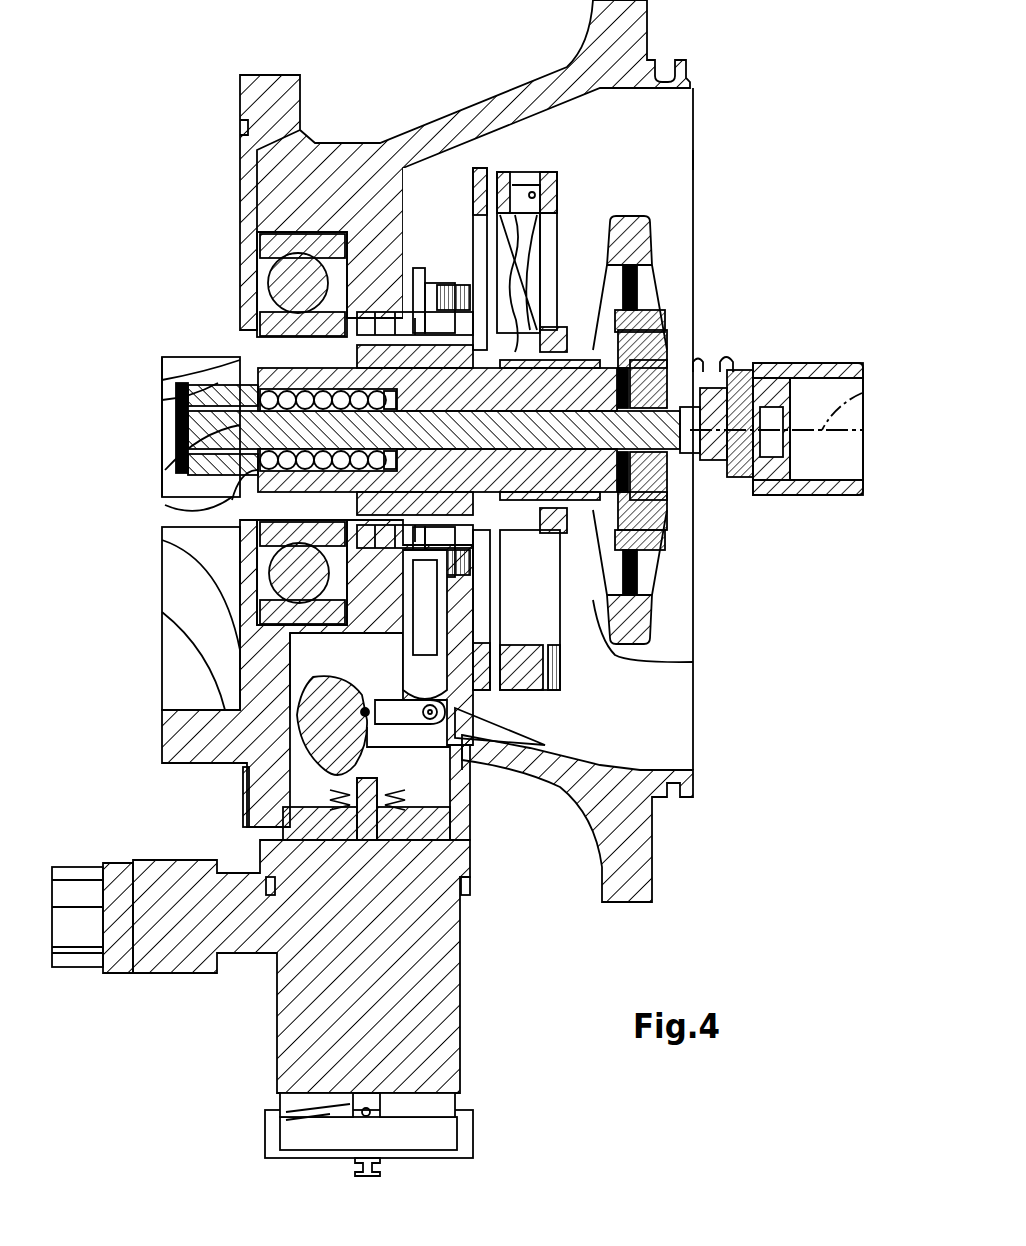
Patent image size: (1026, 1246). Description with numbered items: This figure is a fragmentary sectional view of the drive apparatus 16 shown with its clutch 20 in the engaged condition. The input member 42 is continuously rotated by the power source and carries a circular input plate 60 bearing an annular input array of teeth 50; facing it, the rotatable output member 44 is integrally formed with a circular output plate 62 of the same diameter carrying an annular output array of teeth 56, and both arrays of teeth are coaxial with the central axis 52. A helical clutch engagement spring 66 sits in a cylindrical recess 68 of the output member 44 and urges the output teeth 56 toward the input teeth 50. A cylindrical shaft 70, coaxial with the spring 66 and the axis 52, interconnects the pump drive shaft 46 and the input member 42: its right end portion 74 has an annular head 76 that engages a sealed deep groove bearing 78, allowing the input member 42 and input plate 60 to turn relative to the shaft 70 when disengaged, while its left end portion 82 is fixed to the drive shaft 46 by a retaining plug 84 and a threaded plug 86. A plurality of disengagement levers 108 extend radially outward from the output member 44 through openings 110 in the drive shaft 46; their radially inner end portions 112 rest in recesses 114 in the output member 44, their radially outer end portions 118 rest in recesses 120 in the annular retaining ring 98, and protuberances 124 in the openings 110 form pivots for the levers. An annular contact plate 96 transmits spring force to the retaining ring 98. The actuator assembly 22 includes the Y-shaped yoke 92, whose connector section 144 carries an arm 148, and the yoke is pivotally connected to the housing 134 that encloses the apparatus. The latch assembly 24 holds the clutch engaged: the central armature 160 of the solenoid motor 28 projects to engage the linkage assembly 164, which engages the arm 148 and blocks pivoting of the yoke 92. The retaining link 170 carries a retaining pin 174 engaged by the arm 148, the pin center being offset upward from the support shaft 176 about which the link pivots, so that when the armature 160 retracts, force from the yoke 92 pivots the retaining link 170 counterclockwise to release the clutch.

The drive apparatus 16 is at (722, 124).
The clutch 20 is at (696, 157).
The actuator assembly 22 is at (432, 188).
The latch assembly 24 is at (300, 780).
The motor 28 is at (410, 1020).
The input member 42 is at (797, 363).
The output member 44 is at (262, 322).
The drive shaft 46 is at (163, 488).
The annular input array of teeth 50 is at (655, 296).
The central axis 52 is at (864, 395).
The annular output array of teeth 56 is at (652, 230).
The input plate 60 is at (655, 565).
The output plate 62 is at (660, 662).
The clutch engagement spring 66 is at (396, 395).
The cylindrical recess 68 is at (352, 438).
The shaft 70 is at (178, 416).
The end portion 74 is at (702, 478).
The head 76 is at (768, 488).
The bearing 78 is at (688, 500).
The end portion 82 is at (182, 440).
The retaining plug 84 is at (233, 492).
The threaded plug 86 is at (197, 503).
The yoke 92 is at (465, 770).
The contact plate 96 is at (478, 170).
The retaining ring 98 is at (516, 172).
The disengagement levers 108 is at (538, 250).
The openings 110 is at (470, 405).
The radially inner end portions 112 is at (490, 310).
The recesses 114 is at (556, 346).
The radially outer end portions 118 is at (536, 178).
The recesses 120 is at (550, 185).
The protuberances 124 is at (547, 310).
The housing 134 is at (640, 860).
The connector section 144 is at (460, 590).
The arm 148 is at (482, 698).
The central armature 160 is at (440, 790).
The linkage assembly 164 is at (298, 752).
The retaining link 170 is at (338, 690).
The retaining pin 174 is at (428, 722).
The support shaft 176 is at (364, 704).